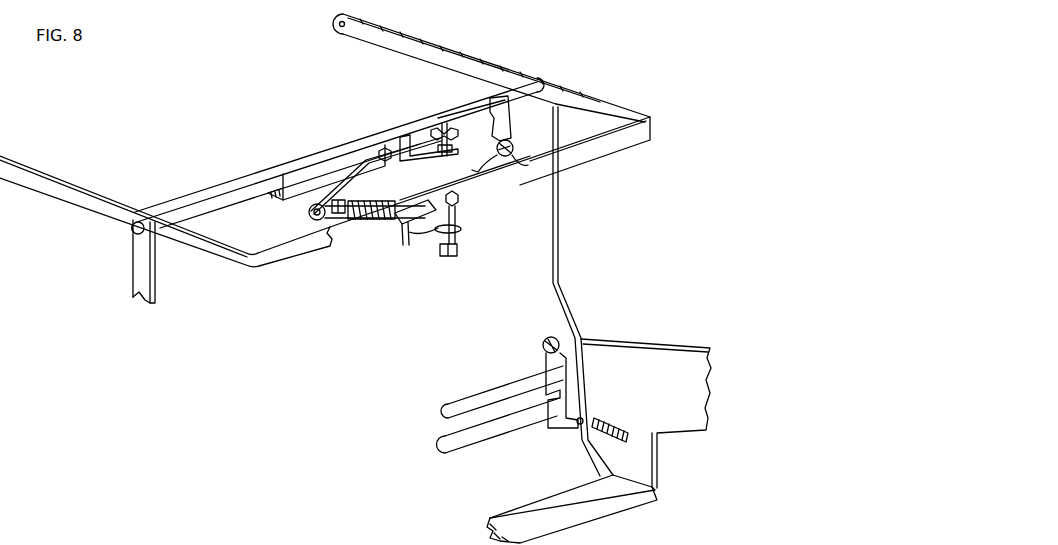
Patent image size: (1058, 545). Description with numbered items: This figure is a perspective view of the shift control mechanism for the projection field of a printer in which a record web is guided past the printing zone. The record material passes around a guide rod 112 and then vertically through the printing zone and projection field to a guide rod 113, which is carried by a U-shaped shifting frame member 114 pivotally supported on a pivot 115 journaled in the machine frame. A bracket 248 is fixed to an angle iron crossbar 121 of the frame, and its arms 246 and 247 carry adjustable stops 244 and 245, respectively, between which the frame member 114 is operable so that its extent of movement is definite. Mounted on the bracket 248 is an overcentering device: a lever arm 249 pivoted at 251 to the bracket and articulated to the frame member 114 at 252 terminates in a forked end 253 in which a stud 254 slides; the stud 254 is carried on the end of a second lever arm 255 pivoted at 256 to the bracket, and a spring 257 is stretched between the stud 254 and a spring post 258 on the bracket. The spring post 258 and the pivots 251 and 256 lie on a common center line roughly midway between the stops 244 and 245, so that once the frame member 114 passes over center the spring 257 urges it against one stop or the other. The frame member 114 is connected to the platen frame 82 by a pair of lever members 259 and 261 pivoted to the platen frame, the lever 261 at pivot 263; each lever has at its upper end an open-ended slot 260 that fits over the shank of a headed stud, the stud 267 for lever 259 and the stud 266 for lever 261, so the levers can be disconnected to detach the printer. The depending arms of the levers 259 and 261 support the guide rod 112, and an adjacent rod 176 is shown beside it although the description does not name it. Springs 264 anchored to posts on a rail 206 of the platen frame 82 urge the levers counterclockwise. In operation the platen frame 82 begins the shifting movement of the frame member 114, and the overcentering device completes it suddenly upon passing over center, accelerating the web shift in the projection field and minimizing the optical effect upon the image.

The platen frame 82 is at (681, 344).
The guide rod 112 is at (500, 433).
The guide rod 113 is at (212, 197).
The U-shaped shifting frame member 114 is at (588, 148).
The pivot 115 is at (339, 22).
The angle iron crossbar 121 is at (304, 174).
The upper tube 176 is at (488, 398).
The rail 206 is at (512, 518).
The adjustable stop 244 is at (470, 179).
The adjustable stop 245 is at (455, 213).
The arm 246 is at (428, 146).
The arm 247 is at (458, 220).
The bracket 248 is at (366, 168).
The lever arm 249 is at (495, 145).
The pivot 251 is at (509, 156).
The articulation point 252 is at (456, 200).
The forked end 253 is at (400, 218).
The stud 254 is at (405, 215).
The lever arm 255 is at (362, 207).
The pivot 256 is at (312, 210).
The spring 257 is at (358, 227).
The spring post 258 is at (314, 226).
The lever member 259 is at (133, 298).
The open-ended slot 260 is at (156, 252).
The lever member 261 is at (559, 245).
The pivot 263 is at (545, 343).
The spring 264 is at (613, 428).
The headed stud 266 is at (551, 80).
The headed stud 267 is at (131, 231).